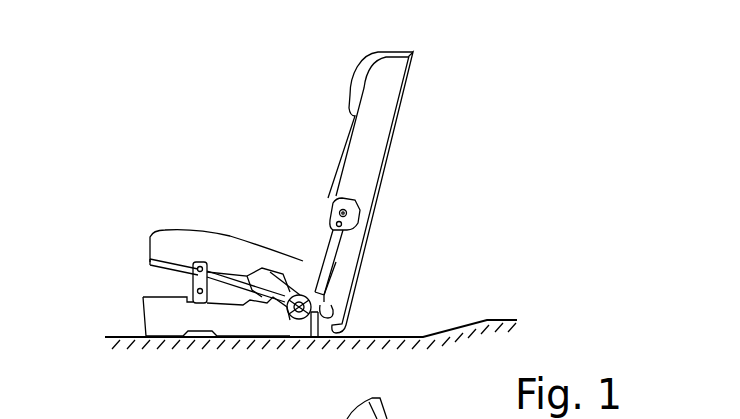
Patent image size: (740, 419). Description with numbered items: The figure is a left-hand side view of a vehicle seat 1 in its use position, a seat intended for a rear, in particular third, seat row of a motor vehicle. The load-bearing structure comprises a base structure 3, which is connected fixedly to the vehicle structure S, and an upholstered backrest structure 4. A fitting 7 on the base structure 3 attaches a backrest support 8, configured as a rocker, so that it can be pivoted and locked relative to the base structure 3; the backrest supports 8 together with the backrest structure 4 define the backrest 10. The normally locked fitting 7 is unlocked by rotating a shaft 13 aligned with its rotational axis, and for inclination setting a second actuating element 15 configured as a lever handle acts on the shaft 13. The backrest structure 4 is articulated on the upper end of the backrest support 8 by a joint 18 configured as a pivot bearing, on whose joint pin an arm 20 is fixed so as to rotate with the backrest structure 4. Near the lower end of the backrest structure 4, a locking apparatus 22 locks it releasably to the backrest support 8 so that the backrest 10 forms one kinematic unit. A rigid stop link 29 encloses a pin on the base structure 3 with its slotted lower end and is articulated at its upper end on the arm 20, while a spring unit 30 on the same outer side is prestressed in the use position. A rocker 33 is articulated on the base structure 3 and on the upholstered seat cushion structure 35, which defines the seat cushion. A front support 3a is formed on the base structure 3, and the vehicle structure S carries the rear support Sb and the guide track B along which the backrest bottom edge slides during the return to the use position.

The vehicle seat 1 is at (254, 108).
The base structure 3 is at (163, 315).
The front support 3a is at (270, 272).
The backrest structure 4 is at (397, 123).
The fitting 7 is at (311, 320).
The backrest support 8 is at (350, 222).
The backrest 10 is at (308, 253).
The shaft 13 is at (293, 320).
The second actuating element 15 is at (268, 272).
The joint 18 is at (350, 209).
The arm 20 is at (331, 202).
The locking apparatus 22 is at (340, 306).
The stop link 29 is at (322, 296).
The spring unit 30 is at (330, 259).
The rocker 33 is at (205, 282).
The seat cushion structure 35 is at (193, 264).
The guide track B is at (483, 320).
The rear support Sb is at (510, 320).
The vehicle structure S is at (391, 376).